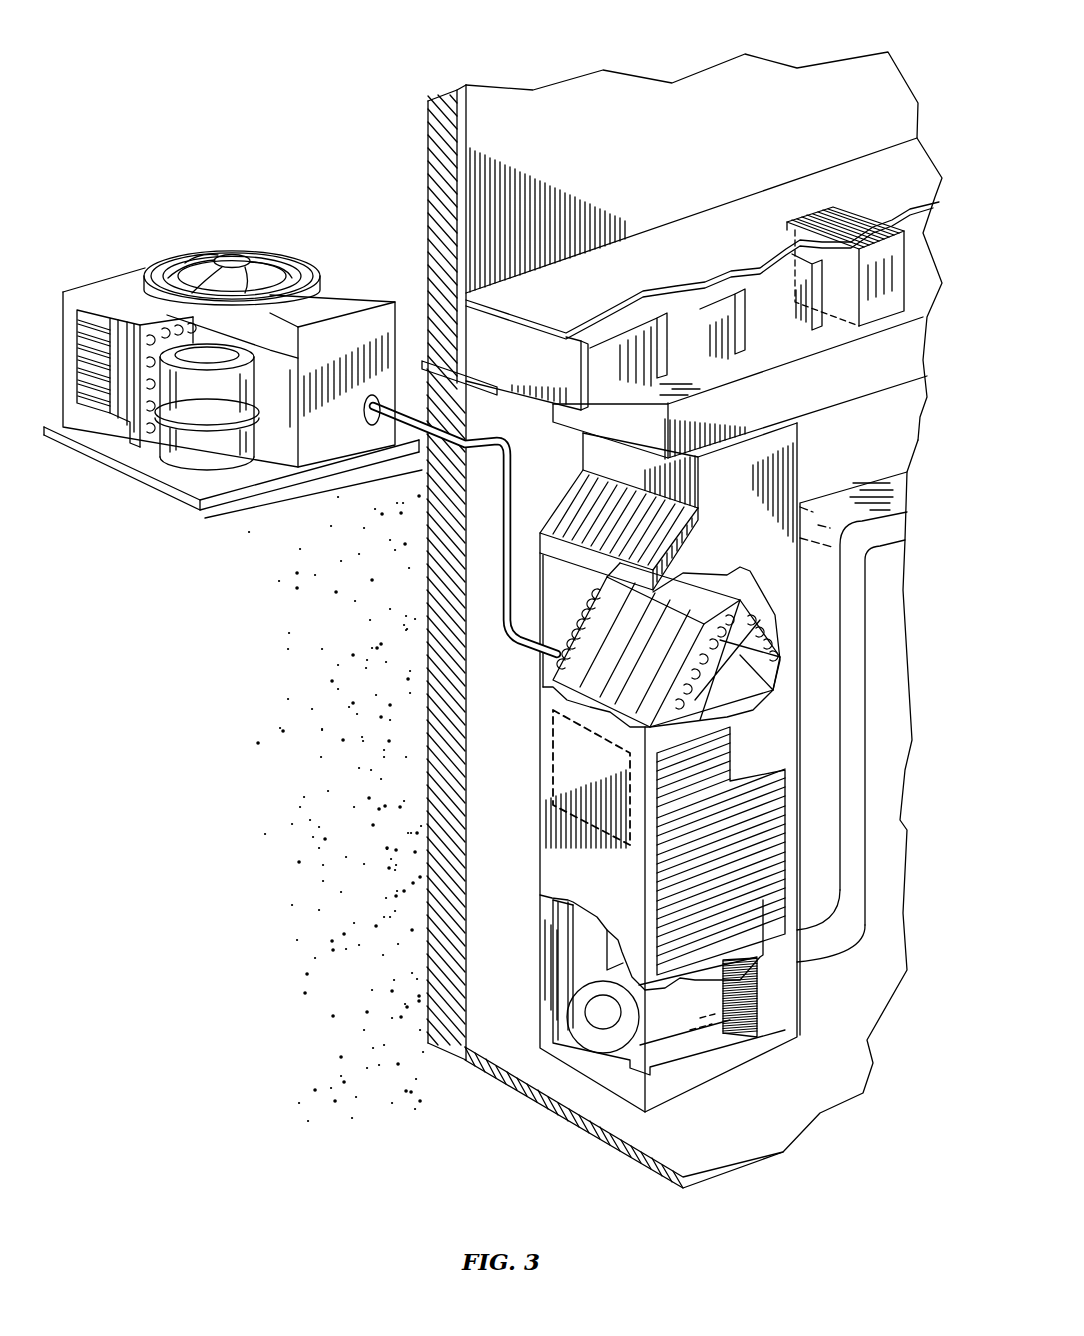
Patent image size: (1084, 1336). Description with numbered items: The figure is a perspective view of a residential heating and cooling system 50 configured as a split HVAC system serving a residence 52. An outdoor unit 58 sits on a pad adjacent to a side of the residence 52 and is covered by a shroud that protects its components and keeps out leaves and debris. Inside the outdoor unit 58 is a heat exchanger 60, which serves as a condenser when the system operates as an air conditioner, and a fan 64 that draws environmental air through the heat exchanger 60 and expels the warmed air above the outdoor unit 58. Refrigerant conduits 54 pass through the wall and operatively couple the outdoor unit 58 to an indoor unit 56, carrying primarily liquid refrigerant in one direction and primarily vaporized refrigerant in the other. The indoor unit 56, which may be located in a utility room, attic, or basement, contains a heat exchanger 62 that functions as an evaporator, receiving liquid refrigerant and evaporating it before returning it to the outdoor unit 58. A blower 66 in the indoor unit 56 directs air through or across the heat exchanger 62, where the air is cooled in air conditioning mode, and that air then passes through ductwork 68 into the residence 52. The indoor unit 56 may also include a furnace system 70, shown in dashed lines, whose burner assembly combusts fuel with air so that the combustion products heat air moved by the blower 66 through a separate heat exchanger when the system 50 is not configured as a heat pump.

The residential heating and cooling system 50 is at (354, 21).
The residence 52 is at (588, 92).
The refrigerant conduits 54 is at (503, 508).
The indoor unit 56 is at (519, 808).
The outdoor unit 58 is at (180, 228).
The heat exchanger 60 is at (153, 337).
The heat exchanger 62 is at (612, 680).
The fan 64 is at (262, 252).
The blower 66 is at (597, 1037).
The ductwork 68 is at (878, 285).
The furnace system 70 is at (552, 740).